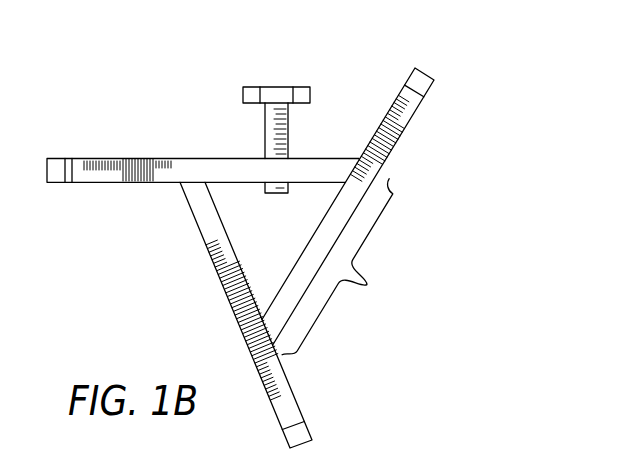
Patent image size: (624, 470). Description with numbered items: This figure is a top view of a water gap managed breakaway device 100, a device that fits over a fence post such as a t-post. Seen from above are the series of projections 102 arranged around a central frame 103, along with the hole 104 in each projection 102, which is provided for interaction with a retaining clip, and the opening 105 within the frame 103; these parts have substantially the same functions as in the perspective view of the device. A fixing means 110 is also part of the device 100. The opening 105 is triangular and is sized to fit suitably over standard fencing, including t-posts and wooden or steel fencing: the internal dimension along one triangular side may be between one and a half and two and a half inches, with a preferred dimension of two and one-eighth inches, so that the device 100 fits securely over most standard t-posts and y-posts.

The water gap managed breakaway device 100 is at (350, 88).
The projection 102 is at (381, 168).
The central frame 103 is at (342, 267).
The hole 104 is at (424, 97).
The opening 105 is at (245, 240).
The fixing means 110 is at (277, 87).